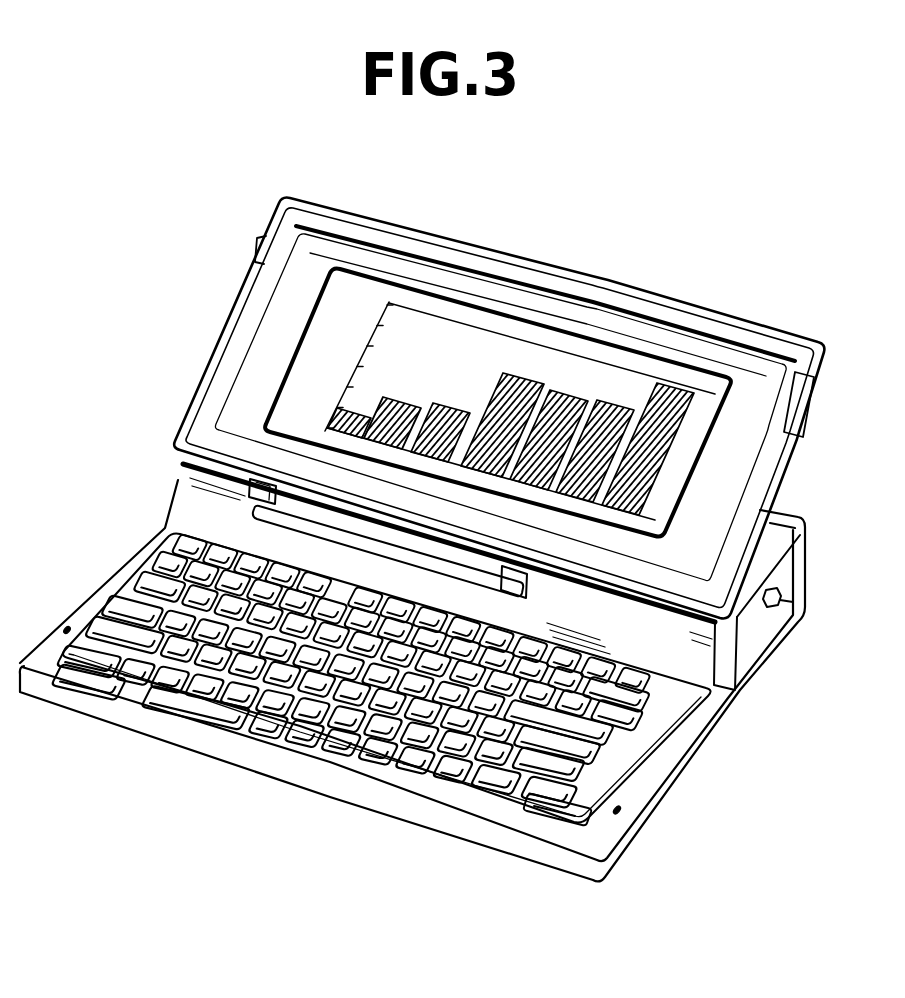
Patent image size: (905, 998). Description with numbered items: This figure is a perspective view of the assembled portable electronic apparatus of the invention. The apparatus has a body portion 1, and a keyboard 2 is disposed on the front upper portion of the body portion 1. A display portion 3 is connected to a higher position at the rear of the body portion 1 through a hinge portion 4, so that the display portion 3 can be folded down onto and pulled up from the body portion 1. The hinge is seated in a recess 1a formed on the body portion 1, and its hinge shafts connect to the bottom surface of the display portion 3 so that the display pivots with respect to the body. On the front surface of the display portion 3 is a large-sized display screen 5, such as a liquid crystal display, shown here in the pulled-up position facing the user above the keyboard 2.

The body portion 1 is at (258, 760).
The recess 1a is at (518, 584).
The keyboard 2 is at (122, 607).
The display portion 3 is at (652, 292).
The hinge portion 4 is at (280, 510).
The display screen 5 is at (432, 330).